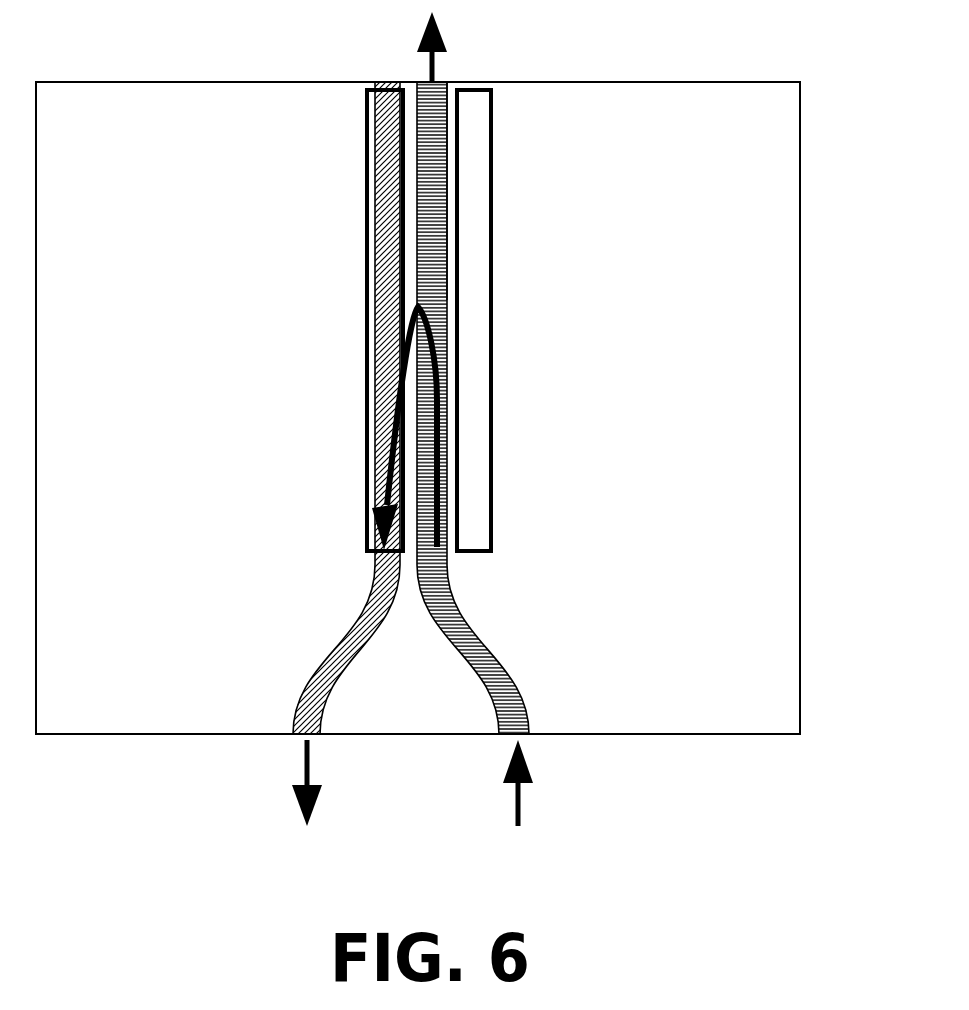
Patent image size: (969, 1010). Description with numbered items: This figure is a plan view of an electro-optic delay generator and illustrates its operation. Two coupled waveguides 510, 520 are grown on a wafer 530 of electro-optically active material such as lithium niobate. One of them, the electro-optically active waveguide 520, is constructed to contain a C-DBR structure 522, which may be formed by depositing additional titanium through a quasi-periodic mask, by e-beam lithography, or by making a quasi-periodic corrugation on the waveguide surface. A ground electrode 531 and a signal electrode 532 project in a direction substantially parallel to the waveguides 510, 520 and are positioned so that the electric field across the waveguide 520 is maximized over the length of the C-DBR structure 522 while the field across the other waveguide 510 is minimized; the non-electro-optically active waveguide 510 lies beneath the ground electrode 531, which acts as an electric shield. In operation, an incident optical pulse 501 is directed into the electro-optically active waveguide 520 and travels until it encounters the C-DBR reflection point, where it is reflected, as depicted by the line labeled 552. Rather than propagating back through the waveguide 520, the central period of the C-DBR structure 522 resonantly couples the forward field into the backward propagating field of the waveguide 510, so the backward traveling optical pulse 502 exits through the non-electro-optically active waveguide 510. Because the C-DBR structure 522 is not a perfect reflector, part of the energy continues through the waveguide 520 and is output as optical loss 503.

The wafer 530 is at (765, 318).
The ground electrode 531 is at (365, 277).
The signal electrode 532 is at (493, 337).
The non-electro-optically active waveguide 510 is at (370, 512).
The electro-optically active waveguide 520 is at (447, 501).
The C-DBR structure 522 is at (454, 262).
The reflection of the optical pulse 552 is at (437, 412).
The optical loss 503 is at (434, 60).
The backward traveling optical pulse 502 is at (305, 768).
The incident optical pulse 501 is at (522, 790).